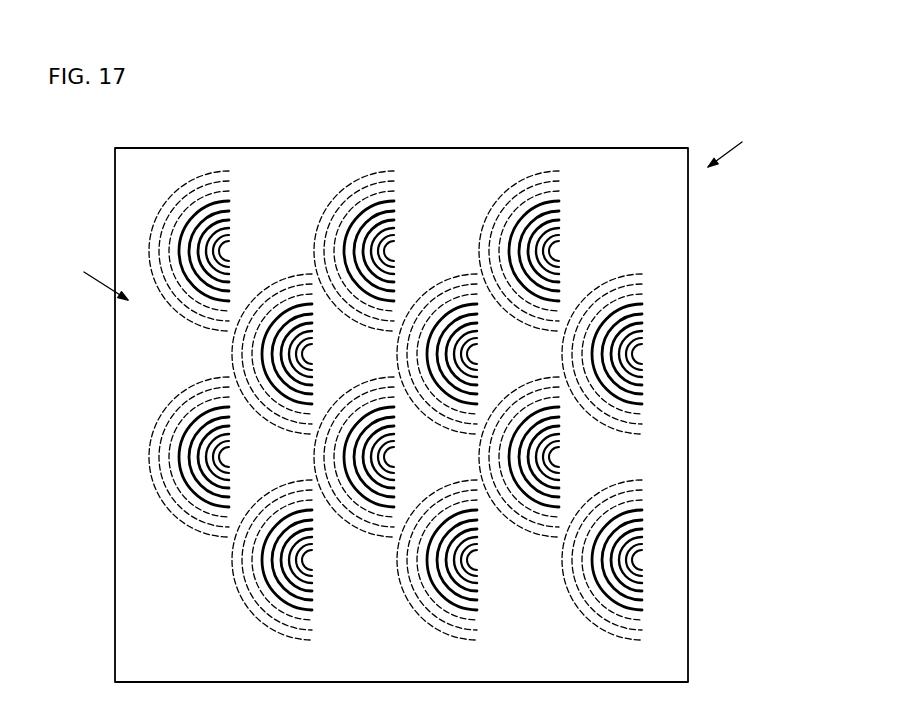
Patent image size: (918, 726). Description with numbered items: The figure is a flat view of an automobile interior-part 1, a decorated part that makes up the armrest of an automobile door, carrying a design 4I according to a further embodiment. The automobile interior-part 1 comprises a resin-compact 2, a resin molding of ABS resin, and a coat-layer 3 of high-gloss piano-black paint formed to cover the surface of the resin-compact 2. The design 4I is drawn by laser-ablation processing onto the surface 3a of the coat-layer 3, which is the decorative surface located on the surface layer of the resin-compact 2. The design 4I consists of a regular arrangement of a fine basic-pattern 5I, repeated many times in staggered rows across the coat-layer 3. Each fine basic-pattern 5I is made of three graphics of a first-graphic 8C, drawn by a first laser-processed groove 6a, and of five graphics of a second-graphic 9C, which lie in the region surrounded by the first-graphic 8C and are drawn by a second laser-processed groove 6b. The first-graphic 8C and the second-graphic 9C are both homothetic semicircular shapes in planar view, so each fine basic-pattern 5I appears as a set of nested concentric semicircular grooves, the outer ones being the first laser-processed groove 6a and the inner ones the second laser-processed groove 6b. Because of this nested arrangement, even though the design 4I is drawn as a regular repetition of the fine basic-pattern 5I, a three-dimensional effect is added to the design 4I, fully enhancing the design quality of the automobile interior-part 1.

The automobile interior-part 1 is at (761, 160).
The resin-compact 2 is at (688, 219).
The coat-layer 3 is at (685, 272).
The surface 3a is at (672, 462).
The design 4I is at (91, 277).
The fine basic-pattern 5I is at (157, 208).
The first laser-processed groove 6a is at (411, 400).
The second laser-processed groove 6b is at (427, 404).
The first-graphic 8C is at (454, 457).
The second-graphic 9C is at (447, 427).